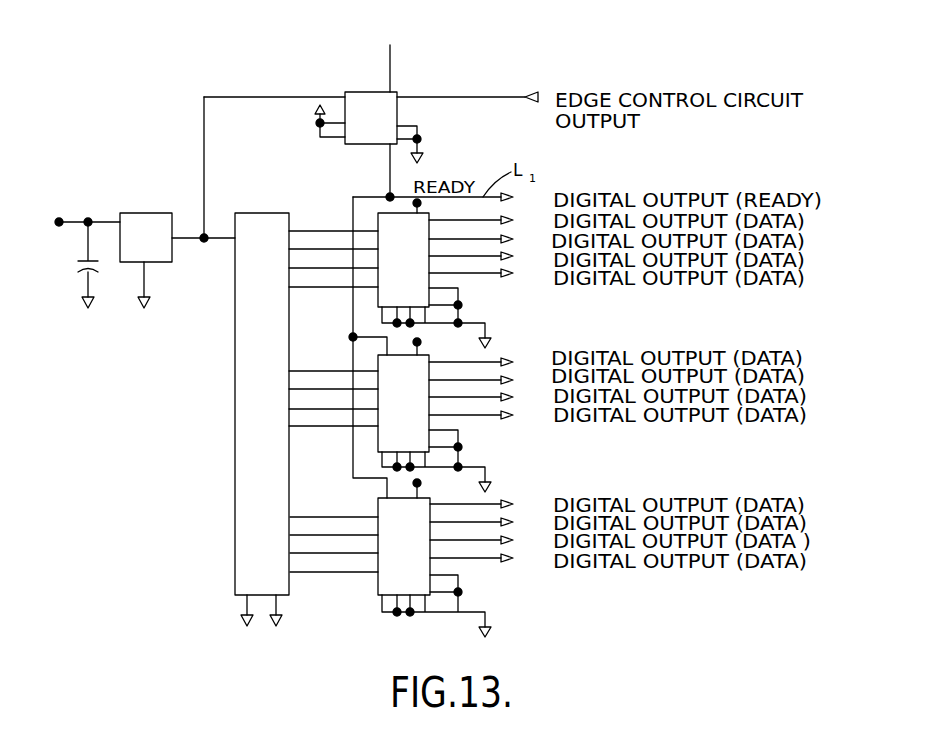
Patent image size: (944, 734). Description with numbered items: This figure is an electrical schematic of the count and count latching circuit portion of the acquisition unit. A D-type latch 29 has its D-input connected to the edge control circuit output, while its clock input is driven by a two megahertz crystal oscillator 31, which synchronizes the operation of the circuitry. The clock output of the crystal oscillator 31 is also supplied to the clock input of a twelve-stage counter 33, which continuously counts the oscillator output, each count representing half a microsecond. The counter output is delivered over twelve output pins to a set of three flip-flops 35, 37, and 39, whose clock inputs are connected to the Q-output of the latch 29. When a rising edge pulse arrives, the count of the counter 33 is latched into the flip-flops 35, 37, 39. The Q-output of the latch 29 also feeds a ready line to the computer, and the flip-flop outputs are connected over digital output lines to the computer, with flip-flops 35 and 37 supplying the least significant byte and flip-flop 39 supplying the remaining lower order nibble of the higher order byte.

The D-type latch 29 is at (357, 92).
The crystal oscillator 31 is at (155, 185).
The twelve-stage counter 33 is at (235, 326).
The flip-flop 35 is at (415, 279).
The flip-flop 37 is at (416, 400).
The flip-flop 39 is at (415, 543).